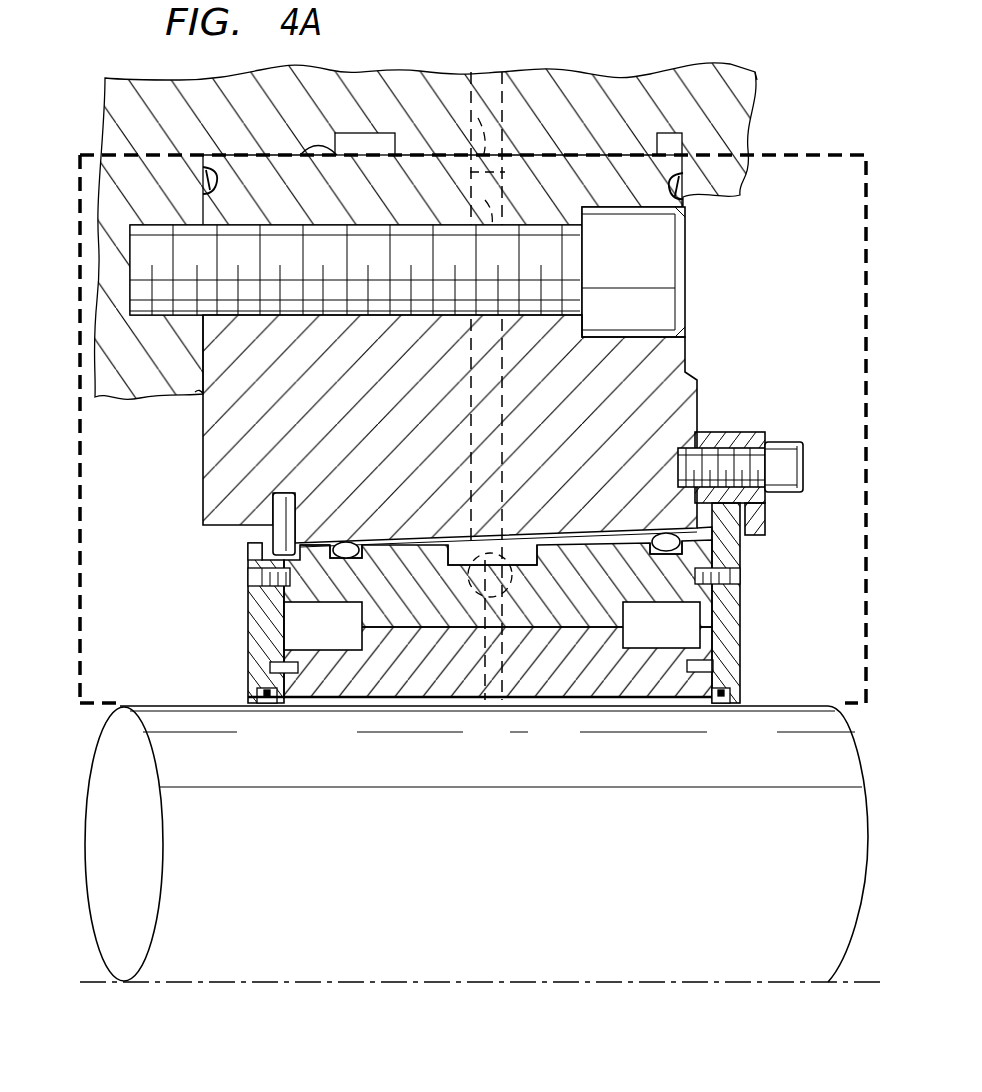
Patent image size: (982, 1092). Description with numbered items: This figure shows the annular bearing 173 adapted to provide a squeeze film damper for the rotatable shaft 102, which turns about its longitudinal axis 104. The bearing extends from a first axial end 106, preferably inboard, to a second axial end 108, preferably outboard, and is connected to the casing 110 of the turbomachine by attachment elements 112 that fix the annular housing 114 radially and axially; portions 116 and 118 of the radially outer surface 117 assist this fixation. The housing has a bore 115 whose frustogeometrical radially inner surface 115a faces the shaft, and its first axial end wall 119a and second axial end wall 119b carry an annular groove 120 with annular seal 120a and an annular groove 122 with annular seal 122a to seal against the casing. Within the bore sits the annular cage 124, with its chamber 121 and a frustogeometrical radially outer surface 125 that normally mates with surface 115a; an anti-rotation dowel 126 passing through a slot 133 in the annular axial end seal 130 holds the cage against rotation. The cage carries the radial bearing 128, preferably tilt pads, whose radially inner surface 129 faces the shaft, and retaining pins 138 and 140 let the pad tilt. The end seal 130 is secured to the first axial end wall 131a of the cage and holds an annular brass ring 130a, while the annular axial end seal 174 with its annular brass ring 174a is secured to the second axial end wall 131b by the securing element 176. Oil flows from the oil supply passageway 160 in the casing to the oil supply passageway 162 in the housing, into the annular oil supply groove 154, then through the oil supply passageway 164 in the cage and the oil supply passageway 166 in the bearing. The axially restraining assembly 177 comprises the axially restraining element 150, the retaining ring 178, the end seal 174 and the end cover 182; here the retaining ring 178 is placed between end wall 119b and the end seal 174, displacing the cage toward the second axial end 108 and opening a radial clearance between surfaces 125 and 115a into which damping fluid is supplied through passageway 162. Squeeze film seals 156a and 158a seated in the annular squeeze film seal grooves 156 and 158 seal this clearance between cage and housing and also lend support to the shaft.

The rotatable shaft 102 is at (487, 869).
The longitudinal axis 104 is at (205, 985).
The first axial end 106 is at (82, 150).
The second axial end 108 is at (866, 160).
The casing 110 is at (142, 130).
The attachment element 112 is at (663, 305).
The annular housing 114 is at (340, 400).
The bore 115 is at (742, 548).
The frustogeometrical radially inner surface 115a is at (462, 540).
The portion of radially outer surface 116 is at (383, 131).
The radially outer surface 117 is at (340, 152).
The portion of radially outer surface 118 is at (684, 133).
The first axial end wall 119a is at (197, 393).
The second axial end wall 119b is at (752, 118).
The annular groove 120 is at (215, 183).
The annular seal 120a is at (203, 183).
The chamber 121 is at (620, 706).
The annular groove 122 is at (670, 186).
The annular seal 122a is at (722, 196).
The annular cage 124 is at (422, 614).
The frustogeometrical radially outer surface 125 is at (385, 550).
The anti-rotation dowel 126 is at (280, 507).
The radial bearing 128 is at (410, 674).
The radially inner surface 129 is at (520, 706).
The annular axial end seal 130 is at (250, 578).
The annular brass ring 130a is at (268, 706).
The first axial end wall 131a is at (270, 598).
The second axial end wall 131b is at (661, 625).
The slot 133 is at (250, 552).
The retaining pin 138 is at (270, 667).
The retaining pin 140 is at (688, 666).
The axially restraining element 150 is at (790, 460).
The annular oil supply groove 154 is at (448, 552).
The annular squeeze film seal groove 156 is at (356, 540).
The squeeze film seal 156a is at (344, 542).
The annular squeeze film seal groove 158 is at (650, 548).
The squeeze film seal 158a is at (662, 532).
The oil supply passageway 160 is at (486, 72).
The oil supply passageway 162 is at (486, 240).
The oil supply passageway 164 is at (518, 589).
The oil supply passageway 166 is at (485, 706).
The annular bearing 173 is at (80, 680).
The annular axial end seal 174 is at (735, 668).
The annular brass ring 174a is at (717, 706).
The securing element 176 is at (742, 580).
The axially restraining assembly 177 is at (765, 448).
The retaining ring 178 is at (733, 432).
The end cover 182 is at (766, 508).